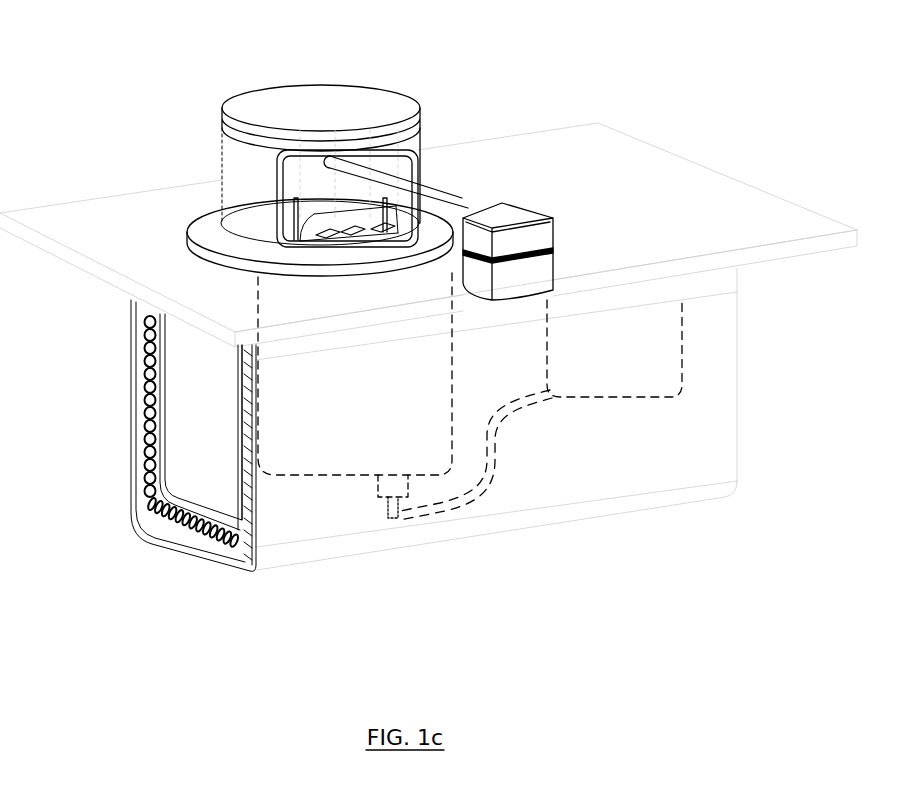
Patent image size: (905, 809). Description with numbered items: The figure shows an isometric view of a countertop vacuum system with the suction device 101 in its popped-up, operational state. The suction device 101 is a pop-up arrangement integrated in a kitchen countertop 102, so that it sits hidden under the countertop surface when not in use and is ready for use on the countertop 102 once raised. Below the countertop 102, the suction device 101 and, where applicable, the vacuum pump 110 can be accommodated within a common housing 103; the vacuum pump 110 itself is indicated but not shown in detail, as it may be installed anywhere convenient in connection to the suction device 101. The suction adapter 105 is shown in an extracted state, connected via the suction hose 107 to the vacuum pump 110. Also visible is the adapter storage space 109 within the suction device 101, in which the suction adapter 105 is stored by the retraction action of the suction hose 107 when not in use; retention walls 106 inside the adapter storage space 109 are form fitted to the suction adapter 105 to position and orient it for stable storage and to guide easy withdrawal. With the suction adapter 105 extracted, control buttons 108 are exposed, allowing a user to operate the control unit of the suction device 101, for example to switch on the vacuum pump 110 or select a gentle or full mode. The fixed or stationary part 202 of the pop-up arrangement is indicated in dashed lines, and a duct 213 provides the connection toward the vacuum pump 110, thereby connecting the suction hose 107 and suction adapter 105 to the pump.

The suction device 101 is at (336, 96).
The kitchen countertop 102 is at (719, 186).
The common housing 103 is at (729, 424).
The suction adapter 105 is at (528, 201).
The retention walls 106 is at (371, 212).
The suction hose 107 is at (443, 185).
The control buttons 108 is at (385, 247).
The adapter storage space 109 is at (329, 186).
The vacuum pump 110 is at (588, 361).
The stationary part 202 is at (466, 384).
The duct 213 is at (406, 527).